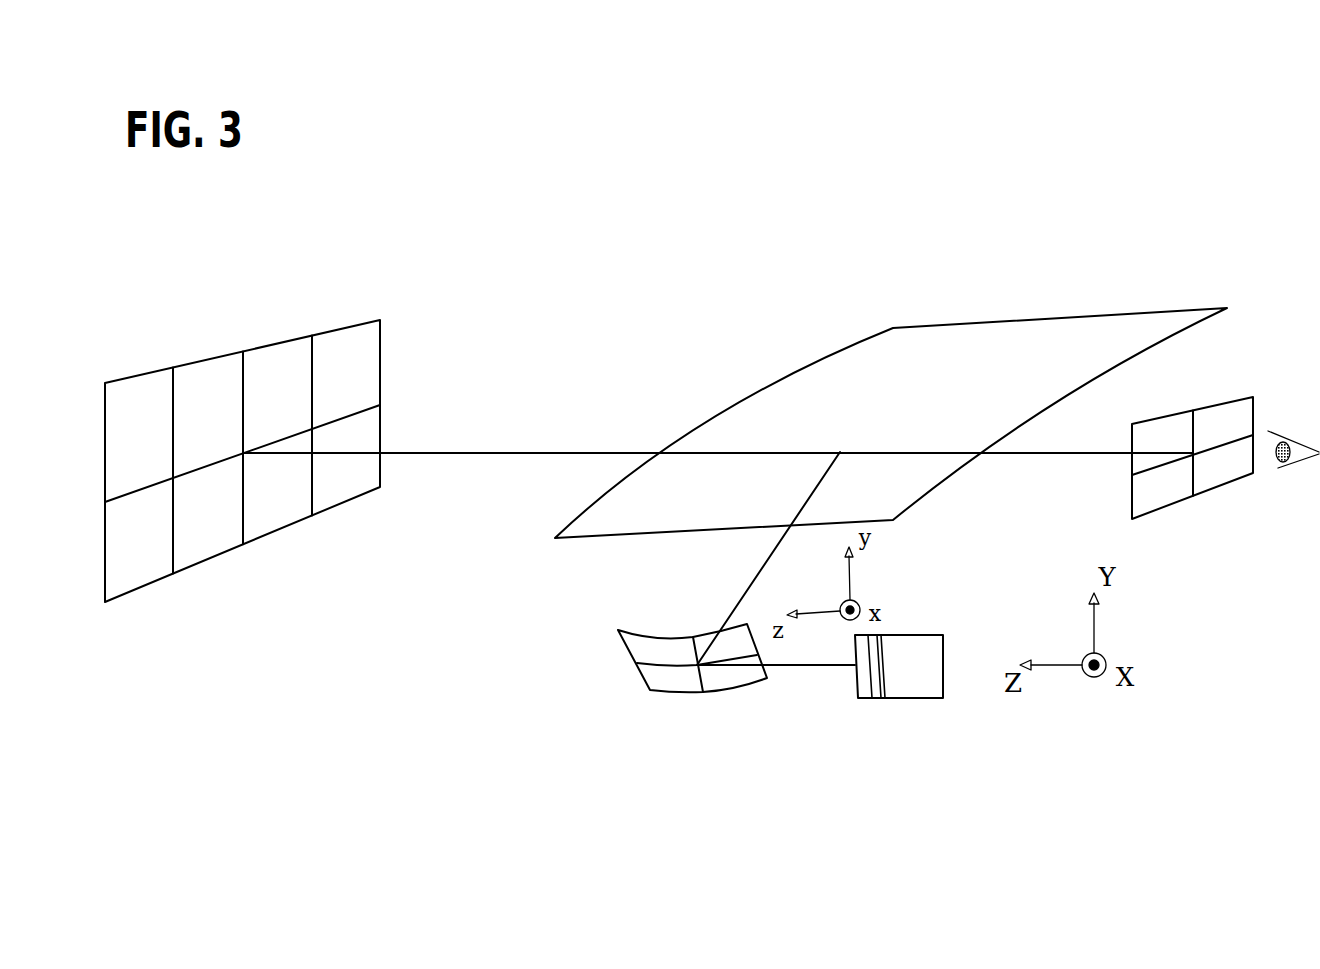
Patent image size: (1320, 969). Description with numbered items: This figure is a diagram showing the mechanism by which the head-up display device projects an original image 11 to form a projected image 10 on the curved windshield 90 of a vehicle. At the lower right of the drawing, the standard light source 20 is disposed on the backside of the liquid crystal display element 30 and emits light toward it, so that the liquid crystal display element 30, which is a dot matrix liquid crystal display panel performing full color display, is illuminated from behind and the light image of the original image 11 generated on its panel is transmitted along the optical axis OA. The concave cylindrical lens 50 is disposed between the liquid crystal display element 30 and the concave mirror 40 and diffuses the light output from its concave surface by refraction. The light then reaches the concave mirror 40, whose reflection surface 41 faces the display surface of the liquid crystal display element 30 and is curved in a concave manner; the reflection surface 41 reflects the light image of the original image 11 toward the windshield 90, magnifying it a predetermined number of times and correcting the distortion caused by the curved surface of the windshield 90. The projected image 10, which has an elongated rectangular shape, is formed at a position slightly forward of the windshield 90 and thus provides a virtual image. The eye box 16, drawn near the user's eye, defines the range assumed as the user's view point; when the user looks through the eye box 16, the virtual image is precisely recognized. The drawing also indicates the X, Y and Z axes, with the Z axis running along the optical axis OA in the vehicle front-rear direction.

The projected image 10 is at (380, 320).
The windshield 90 is at (882, 353).
The eye box 16 is at (1253, 397).
The concave mirror 40 is at (669, 702).
The reflection surface 41 is at (662, 673).
The concave cylindrical lens 50 is at (857, 675).
The original image 11 is at (868, 690).
The liquid crystal display element 30 is at (878, 690).
The standard light source 20 is at (882, 716).
The optical axis OA is at (798, 668).